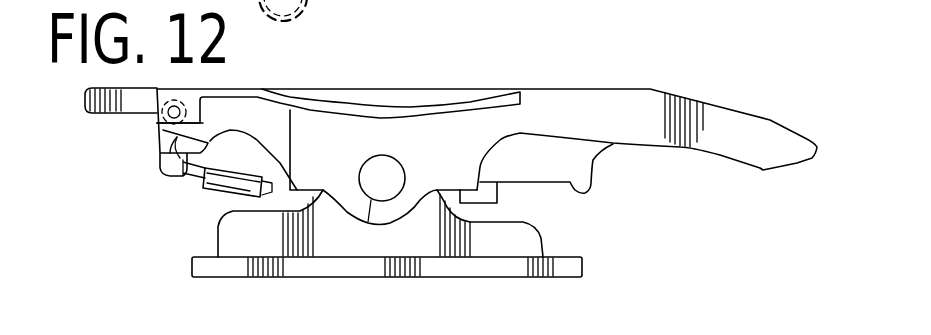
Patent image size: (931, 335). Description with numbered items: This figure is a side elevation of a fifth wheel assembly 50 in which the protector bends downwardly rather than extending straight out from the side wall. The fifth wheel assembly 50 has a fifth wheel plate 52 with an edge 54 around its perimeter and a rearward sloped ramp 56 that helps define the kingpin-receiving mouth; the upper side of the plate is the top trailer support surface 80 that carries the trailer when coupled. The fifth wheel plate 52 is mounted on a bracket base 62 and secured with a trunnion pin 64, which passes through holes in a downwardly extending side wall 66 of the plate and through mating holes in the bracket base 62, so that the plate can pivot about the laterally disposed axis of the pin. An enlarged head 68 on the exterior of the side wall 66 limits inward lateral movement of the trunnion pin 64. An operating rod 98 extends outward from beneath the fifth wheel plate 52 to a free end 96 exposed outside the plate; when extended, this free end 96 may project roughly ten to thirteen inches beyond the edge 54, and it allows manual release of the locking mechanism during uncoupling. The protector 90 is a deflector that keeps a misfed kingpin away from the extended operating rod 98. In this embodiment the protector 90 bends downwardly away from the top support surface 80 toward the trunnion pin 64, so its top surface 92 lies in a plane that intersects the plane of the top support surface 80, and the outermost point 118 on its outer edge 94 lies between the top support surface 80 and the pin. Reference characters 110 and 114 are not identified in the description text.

The fifth wheel assembly 50 is at (558, 89).
The fifth wheel plate 52 is at (105, 103).
The edge 54 is at (240, 87).
The rearward sloped ramp 56 is at (750, 130).
The bracket base 62 is at (232, 240).
The trunnion pin 64 is at (380, 170).
The side wall 66 is at (455, 175).
The enlarged head 68 is at (370, 223).
The top trailer support surface 80 is at (157, 87).
The protector 90 is at (368, 100).
The top surface 92 is at (327, 93).
The outer edge 94 is at (464, 104).
The free end 96 is at (263, 197).
The operating rod 98 is at (183, 170).
The tip 110 is at (817, 145).
The end portion 114 is at (83, 103).
The outermost point 118 is at (397, 108).